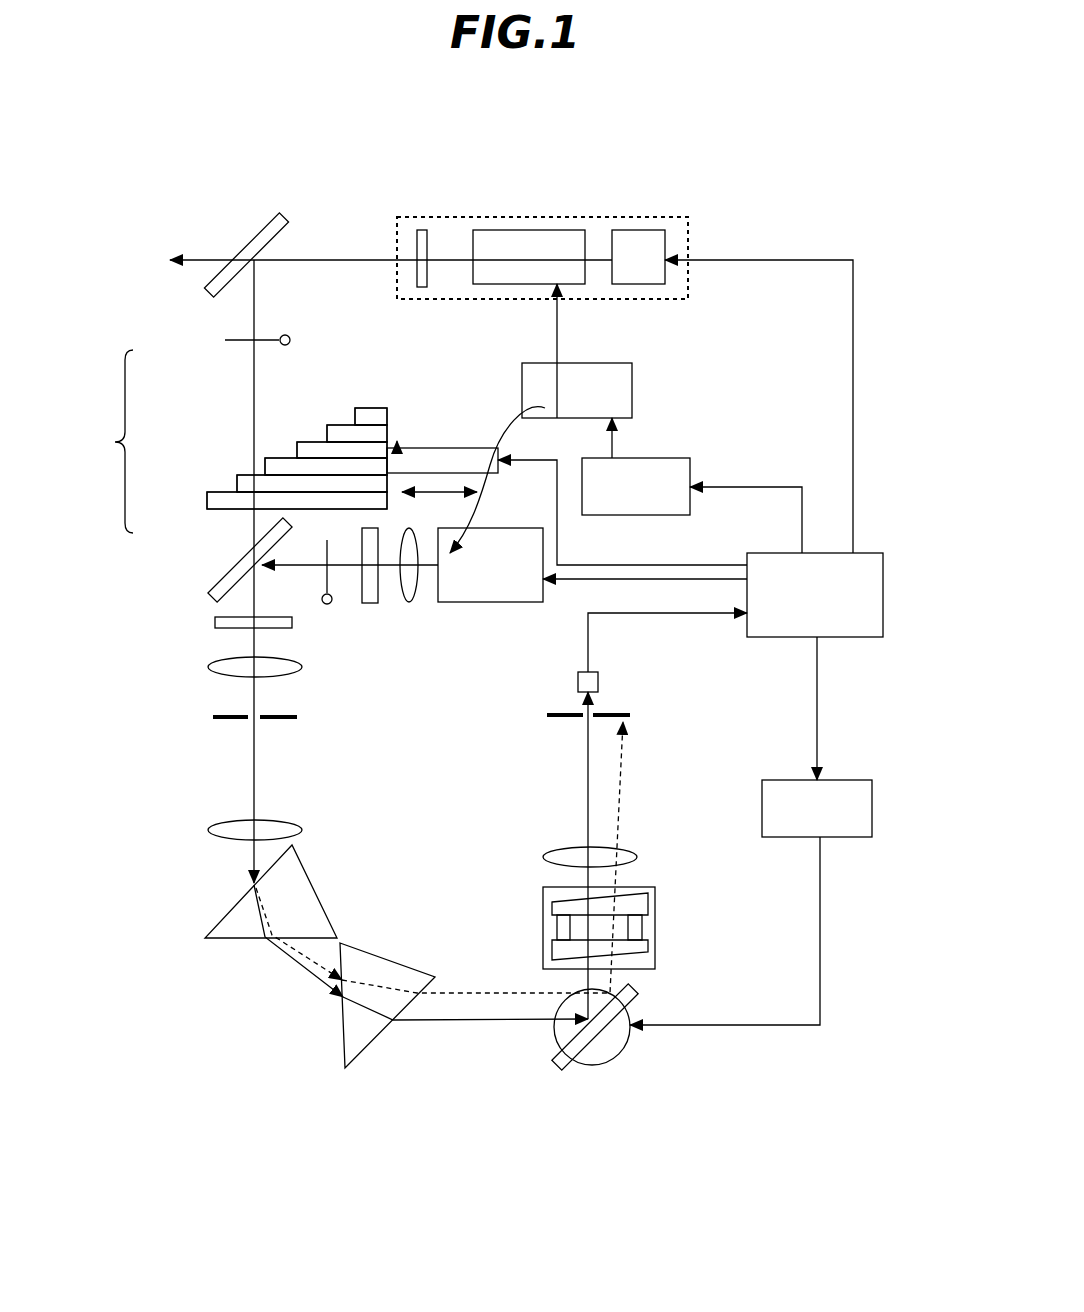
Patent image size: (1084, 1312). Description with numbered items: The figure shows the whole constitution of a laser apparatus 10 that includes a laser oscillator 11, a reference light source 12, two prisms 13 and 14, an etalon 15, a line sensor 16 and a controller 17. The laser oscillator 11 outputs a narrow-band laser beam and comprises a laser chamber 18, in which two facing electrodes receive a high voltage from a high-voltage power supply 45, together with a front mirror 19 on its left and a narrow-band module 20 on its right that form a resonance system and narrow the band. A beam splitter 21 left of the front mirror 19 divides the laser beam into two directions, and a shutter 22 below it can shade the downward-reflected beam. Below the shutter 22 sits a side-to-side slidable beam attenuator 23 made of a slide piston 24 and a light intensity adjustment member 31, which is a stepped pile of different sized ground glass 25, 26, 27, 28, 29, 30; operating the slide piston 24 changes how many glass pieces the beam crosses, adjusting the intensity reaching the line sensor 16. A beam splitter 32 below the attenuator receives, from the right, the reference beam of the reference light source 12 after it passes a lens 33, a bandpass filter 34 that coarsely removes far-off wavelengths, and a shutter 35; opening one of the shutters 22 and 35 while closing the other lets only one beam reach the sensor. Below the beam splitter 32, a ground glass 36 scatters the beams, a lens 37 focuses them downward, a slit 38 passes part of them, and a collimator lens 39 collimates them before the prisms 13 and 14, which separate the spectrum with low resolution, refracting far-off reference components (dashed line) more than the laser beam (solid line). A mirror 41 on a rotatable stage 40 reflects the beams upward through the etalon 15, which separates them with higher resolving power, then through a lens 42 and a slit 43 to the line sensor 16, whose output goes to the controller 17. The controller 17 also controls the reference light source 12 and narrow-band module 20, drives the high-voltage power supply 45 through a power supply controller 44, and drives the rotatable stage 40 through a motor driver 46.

The laser apparatus 10 is at (553, 141).
The laser oscillator 11 is at (460, 215).
The reference light source 12 is at (490, 603).
The prism 13 is at (310, 877).
The prism 14 is at (395, 962).
The etalon 15 is at (655, 917).
The line sensor 16 is at (598, 680).
The controller 17 is at (883, 588).
The laser chamber 18 is at (550, 230).
The front mirror 19 is at (422, 230).
The narrow-band module 20 is at (632, 230).
The beam splitter 21 is at (267, 230).
The shutter 22 is at (283, 338).
The beam attenuator 23 is at (373, 398).
The slide piston 24 is at (435, 460).
The ground glass 25 is at (360, 415).
The ground glass 26 is at (332, 432).
The ground glass 27 is at (302, 449).
The ground glass 28 is at (270, 466).
The ground glass 29 is at (242, 484).
The ground glass 30 is at (212, 500).
The light intensity adjustment member 31 is at (105, 441).
The beam splitter 32 is at (228, 572).
The lens 33 is at (410, 603).
The bandpass filter 34 is at (370, 605).
The shutter 35 is at (328, 605).
The ground glass 36 is at (213, 622).
The lens 37 is at (208, 667).
The slit 38 is at (213, 717).
The collimator lens 39 is at (212, 825).
The rotatable stage 40 is at (608, 1065).
The mirror 41 is at (555, 1070).
The lens 42 is at (637, 857).
The slit 43 is at (553, 717).
The power supply controller 44 is at (683, 458).
The high-voltage power supply 45 is at (632, 378).
The motor driver 46 is at (872, 800).